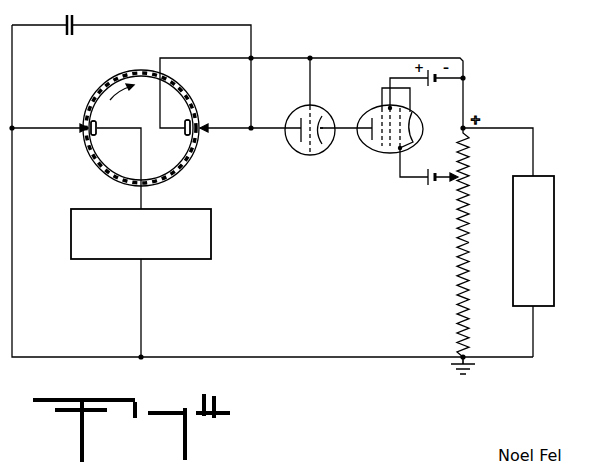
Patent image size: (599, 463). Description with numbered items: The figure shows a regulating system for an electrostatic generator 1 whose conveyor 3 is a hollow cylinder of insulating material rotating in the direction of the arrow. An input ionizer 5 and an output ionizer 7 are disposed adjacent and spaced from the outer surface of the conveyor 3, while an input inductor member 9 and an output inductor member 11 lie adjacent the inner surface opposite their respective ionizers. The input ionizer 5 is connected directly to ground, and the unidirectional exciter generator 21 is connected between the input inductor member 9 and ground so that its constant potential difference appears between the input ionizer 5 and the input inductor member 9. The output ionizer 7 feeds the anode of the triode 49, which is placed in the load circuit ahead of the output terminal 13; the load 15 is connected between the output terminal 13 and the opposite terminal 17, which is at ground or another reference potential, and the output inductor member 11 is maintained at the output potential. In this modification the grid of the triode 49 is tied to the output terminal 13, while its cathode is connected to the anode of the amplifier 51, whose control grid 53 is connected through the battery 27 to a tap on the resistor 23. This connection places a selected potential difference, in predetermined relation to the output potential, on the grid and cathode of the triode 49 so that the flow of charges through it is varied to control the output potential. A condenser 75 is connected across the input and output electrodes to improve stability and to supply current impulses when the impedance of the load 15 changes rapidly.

The electrostatic generator 1 is at (104, 82).
The conveyor 3 is at (136, 72).
The input ionizer 5 is at (82, 125).
The output ionizer 7 is at (206, 126).
The input inductor member 9 is at (96, 134).
The output inductor member 11 is at (185, 133).
The output terminal 13 is at (470, 132).
The load 15 is at (554, 208).
The terminal 17 is at (470, 354).
The unidirectional exciter generator 21 is at (92, 209).
The resistor 23 is at (470, 262).
The battery 27 is at (432, 188).
The triode 49 is at (297, 107).
The amplifier 51 is at (370, 108).
The control grid 53 is at (412, 142).
The condenser 75 is at (77, 22).